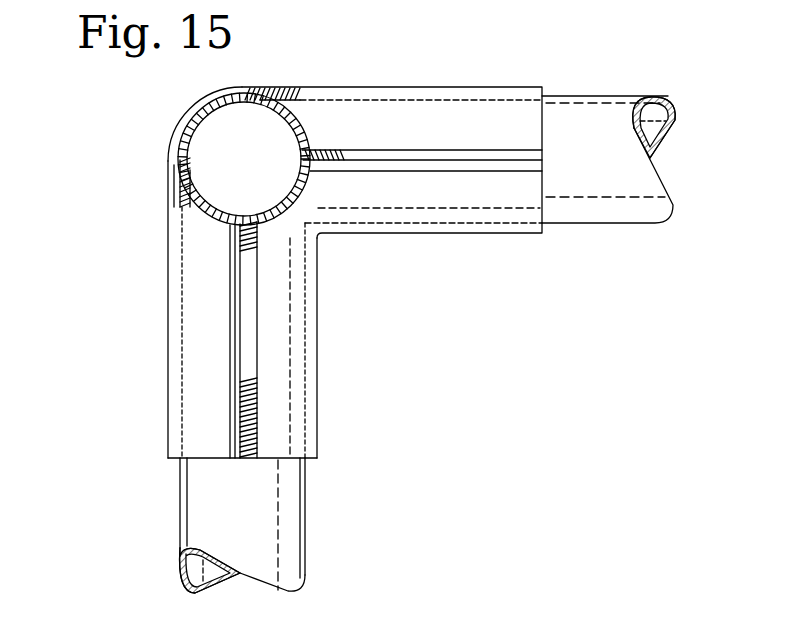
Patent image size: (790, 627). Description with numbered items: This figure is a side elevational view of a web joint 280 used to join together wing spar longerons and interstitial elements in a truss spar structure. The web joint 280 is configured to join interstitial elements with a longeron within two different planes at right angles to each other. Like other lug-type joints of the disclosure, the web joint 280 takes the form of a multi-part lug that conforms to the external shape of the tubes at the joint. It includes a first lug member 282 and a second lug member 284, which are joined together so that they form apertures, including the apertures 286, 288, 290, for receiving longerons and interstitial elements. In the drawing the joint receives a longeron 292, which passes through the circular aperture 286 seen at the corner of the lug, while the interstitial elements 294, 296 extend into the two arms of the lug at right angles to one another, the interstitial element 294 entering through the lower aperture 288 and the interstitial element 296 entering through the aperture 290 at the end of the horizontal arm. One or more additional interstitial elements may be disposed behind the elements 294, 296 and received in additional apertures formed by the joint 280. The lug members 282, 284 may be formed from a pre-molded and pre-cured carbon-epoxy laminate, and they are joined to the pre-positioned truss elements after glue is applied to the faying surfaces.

The web joint 280 is at (475, 349).
The first lug member 282 is at (168, 356).
The second lug member 284 is at (318, 353).
The aperture 286 is at (208, 128).
The aperture 288 is at (203, 462).
The aperture 290 is at (543, 112).
The longeron 292 is at (236, 92).
The interstitial element 294 is at (292, 533).
The interstitial element 296 is at (607, 205).